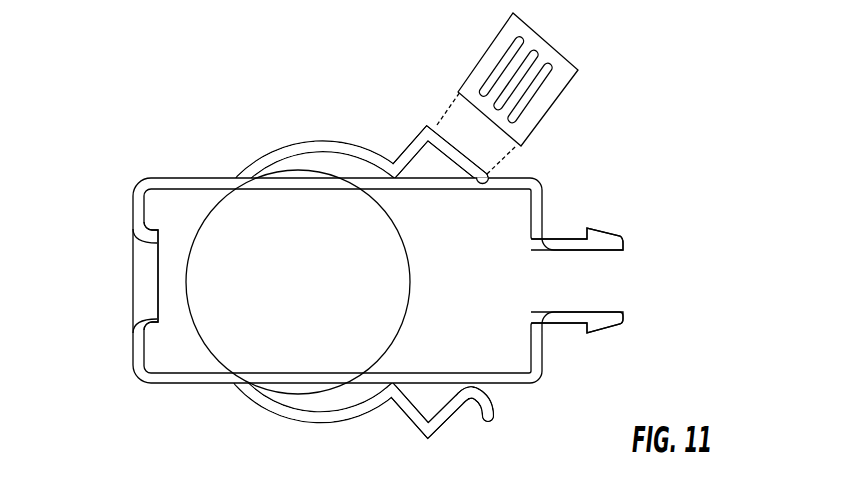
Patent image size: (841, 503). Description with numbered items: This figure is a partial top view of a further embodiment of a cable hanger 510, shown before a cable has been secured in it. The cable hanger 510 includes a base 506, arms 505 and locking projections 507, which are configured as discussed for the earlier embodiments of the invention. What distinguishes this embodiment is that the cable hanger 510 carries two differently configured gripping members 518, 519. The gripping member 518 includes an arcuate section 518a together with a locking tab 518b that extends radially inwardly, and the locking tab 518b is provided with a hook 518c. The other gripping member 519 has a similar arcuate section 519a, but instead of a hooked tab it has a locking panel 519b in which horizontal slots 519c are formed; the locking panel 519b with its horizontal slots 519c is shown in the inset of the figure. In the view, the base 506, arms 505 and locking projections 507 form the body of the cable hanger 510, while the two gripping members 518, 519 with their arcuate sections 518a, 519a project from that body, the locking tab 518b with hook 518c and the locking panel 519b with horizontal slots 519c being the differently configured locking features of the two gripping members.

The cable hanger 510 is at (348, 201).
The arms 505 is at (203, 181).
The base 506 is at (136, 215).
The locking projections 507 is at (607, 243).
The gripping member 518 is at (363, 432).
The arcuate section 518a is at (315, 420).
The locking tab 518b is at (454, 418).
The hook 518c is at (491, 412).
The gripping member 519 is at (446, 96).
The arcuate section 519a is at (363, 150).
The locking panel 519b is at (437, 126).
The horizontal slots 519c is at (570, 80).